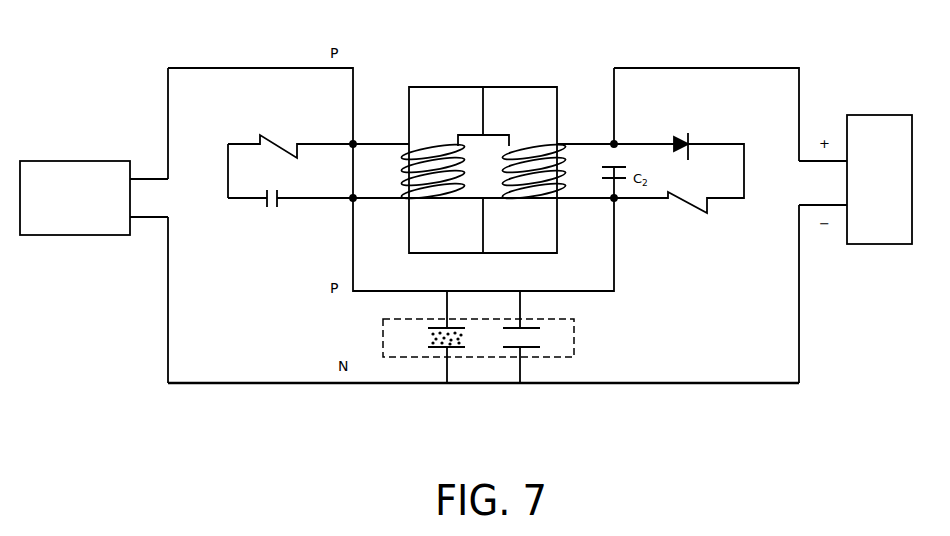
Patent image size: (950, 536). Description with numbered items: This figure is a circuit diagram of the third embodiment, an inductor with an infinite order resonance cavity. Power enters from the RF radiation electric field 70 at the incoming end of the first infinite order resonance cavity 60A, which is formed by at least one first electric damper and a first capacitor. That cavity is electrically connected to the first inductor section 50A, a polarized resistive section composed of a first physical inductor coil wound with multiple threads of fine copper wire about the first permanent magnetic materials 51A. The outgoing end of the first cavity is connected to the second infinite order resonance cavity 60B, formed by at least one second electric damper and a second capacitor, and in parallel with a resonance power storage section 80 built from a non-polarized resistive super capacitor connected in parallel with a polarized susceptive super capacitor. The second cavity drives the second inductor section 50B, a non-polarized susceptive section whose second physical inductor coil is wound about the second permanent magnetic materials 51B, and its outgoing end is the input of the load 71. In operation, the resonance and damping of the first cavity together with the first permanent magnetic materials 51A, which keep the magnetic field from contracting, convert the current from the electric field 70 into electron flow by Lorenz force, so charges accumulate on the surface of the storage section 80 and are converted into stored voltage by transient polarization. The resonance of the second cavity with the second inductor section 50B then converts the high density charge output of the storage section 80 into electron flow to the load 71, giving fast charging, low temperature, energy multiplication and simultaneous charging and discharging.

The RF radiation electric field 70 is at (44, 225).
The load 71 is at (886, 231).
The first infinite order resonance cavity 60A is at (230, 213).
The second infinite order resonance cavity 60B is at (650, 133).
The first inductor section 50A is at (396, 126).
The second inductor section 50B is at (578, 156).
The first permanent magnetic materials 51A is at (427, 100).
The second permanent magnetic materials 51B is at (500, 93).
The resonance power storage section 80 is at (560, 353).